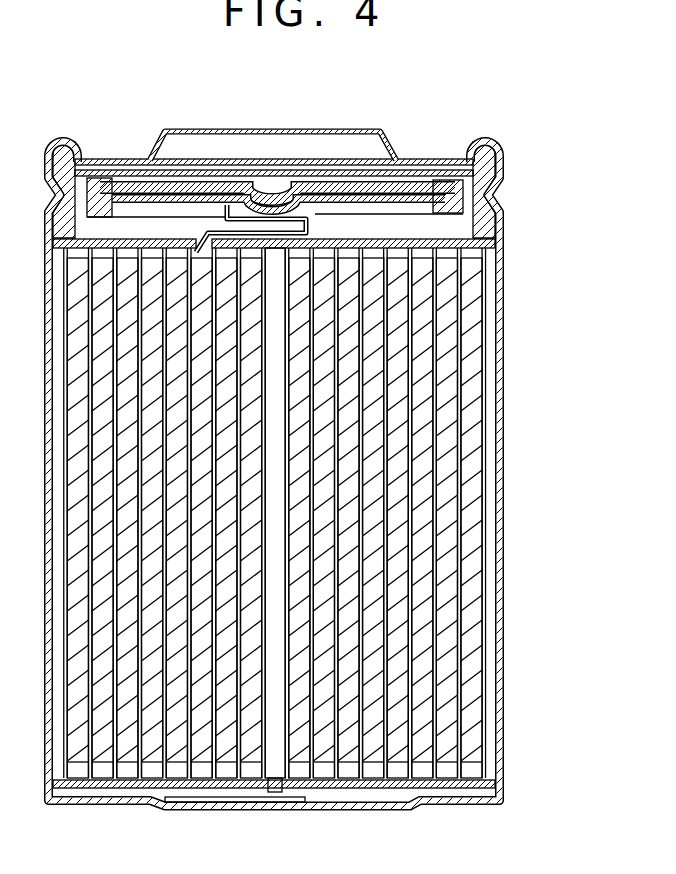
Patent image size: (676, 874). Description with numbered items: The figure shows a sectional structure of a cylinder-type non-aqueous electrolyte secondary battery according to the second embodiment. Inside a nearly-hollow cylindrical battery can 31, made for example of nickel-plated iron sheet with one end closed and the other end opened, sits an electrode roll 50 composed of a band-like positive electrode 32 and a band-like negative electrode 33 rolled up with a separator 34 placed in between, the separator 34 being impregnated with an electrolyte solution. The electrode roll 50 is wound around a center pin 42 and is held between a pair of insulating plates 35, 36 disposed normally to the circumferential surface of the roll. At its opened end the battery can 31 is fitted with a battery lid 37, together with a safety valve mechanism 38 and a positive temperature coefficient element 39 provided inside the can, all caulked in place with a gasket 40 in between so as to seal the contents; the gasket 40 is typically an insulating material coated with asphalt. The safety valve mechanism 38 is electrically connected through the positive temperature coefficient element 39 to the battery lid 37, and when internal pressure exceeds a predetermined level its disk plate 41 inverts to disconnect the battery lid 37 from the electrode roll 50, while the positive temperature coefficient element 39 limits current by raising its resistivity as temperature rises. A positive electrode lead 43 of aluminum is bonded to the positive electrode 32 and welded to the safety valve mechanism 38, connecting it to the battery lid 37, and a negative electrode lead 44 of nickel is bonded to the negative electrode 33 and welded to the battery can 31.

The battery can 31 is at (505, 294).
The positive electrode 32 is at (449, 431).
The negative electrode 33 is at (462, 476).
The separator 34 is at (467, 516).
The insulating plate 35 is at (497, 238).
The insulating plate 36 is at (500, 786).
The battery lid 37 is at (254, 128).
The safety valve mechanism 38 is at (359, 181).
The positive temperature coefficient element 39 is at (495, 165).
The gasket 40 is at (500, 200).
The disk plate 41 is at (324, 183).
The center pin 42 is at (272, 574).
The positive electrode lead 43 is at (236, 197).
The negative electrode lead 44 is at (158, 808).
The electrode roll 50 is at (319, 520).